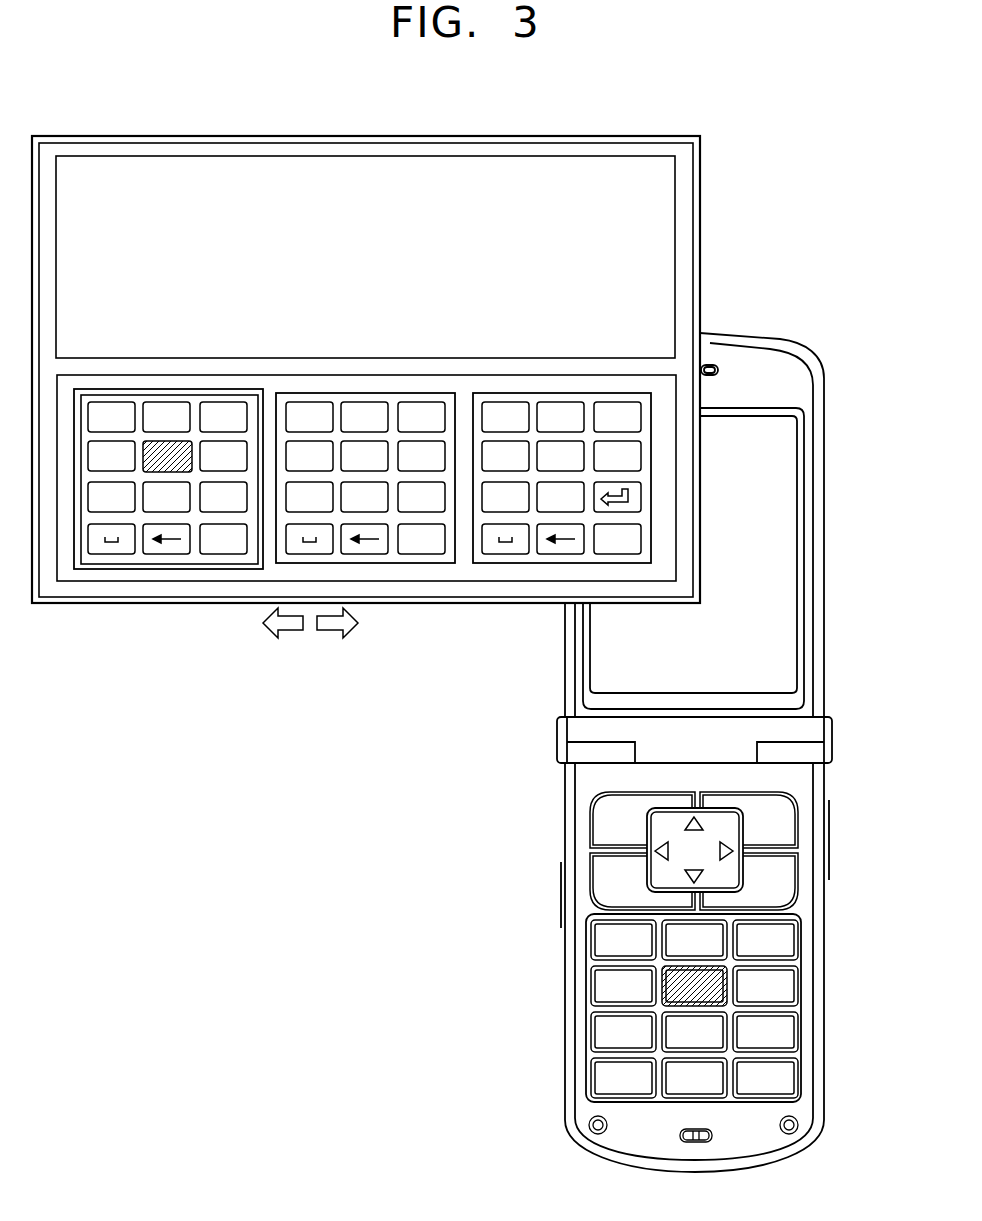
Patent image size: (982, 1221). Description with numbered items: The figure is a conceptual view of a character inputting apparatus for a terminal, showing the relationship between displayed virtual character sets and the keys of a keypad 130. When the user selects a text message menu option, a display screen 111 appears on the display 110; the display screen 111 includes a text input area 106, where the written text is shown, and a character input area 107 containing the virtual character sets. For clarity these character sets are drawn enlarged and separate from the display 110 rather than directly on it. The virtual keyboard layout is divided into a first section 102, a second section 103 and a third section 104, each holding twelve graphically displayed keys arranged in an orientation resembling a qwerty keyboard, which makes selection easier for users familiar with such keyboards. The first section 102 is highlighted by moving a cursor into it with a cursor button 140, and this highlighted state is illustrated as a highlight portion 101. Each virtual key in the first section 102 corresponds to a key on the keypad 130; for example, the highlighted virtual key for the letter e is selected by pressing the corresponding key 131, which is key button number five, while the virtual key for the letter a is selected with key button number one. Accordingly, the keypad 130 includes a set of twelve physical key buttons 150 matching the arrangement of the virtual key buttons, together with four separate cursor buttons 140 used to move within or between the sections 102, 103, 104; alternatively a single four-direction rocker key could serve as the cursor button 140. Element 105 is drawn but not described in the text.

The display screen 111 is at (697, 172).
The text input area 106 is at (670, 237).
The character input area 107 is at (445, 581).
The highlight portion 101 is at (367, 732).
The first section 102 is at (243, 569).
The second section 103 is at (362, 563).
The third section 104 is at (494, 563).
The selected character key 105 is at (660, 986).
The display 110 is at (788, 545).
The keypad 130 is at (580, 882).
The cursor button 140 is at (655, 835).
The physical key buttons 150 is at (638, 1008).
The key 131 is at (662, 998).